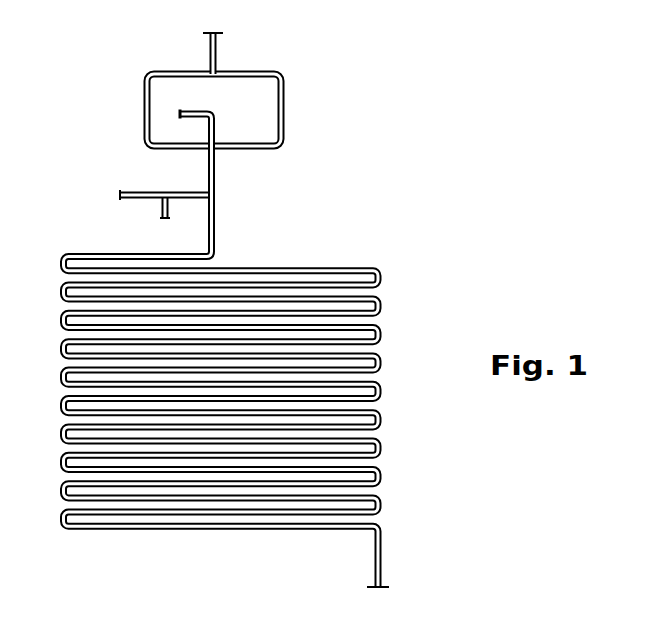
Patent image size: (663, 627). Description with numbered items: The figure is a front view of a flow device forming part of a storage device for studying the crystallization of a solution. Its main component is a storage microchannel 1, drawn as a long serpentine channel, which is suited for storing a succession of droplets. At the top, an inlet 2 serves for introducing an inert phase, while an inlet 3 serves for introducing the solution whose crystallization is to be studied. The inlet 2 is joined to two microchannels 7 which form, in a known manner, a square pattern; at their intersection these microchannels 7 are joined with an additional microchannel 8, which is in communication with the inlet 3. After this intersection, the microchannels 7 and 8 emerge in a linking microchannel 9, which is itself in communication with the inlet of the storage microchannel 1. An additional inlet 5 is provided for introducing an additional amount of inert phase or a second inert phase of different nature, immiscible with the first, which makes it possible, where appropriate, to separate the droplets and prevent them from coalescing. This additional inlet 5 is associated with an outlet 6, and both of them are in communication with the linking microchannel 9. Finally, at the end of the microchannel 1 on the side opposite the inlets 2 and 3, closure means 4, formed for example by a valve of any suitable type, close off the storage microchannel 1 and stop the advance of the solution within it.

The microchannel 1 is at (333, 268).
The inlet 2 is at (218, 48).
The inlet 3 is at (188, 110).
The closure means 4 is at (382, 563).
The additional inlet 5 is at (162, 212).
The outlet 6 is at (130, 192).
The microchannels 7 is at (144, 98).
The additional microchannel 8 is at (216, 131).
The linking microchannel 9 is at (215, 215).